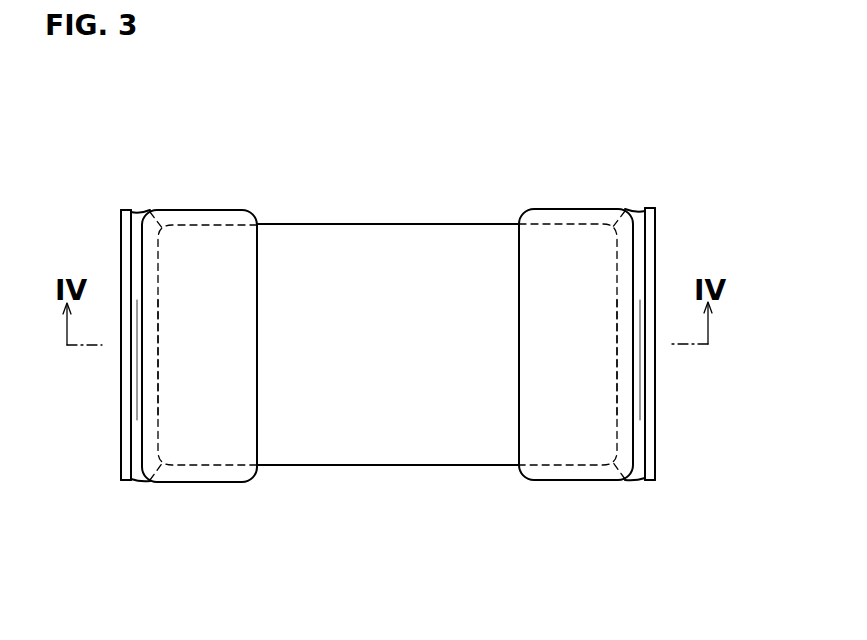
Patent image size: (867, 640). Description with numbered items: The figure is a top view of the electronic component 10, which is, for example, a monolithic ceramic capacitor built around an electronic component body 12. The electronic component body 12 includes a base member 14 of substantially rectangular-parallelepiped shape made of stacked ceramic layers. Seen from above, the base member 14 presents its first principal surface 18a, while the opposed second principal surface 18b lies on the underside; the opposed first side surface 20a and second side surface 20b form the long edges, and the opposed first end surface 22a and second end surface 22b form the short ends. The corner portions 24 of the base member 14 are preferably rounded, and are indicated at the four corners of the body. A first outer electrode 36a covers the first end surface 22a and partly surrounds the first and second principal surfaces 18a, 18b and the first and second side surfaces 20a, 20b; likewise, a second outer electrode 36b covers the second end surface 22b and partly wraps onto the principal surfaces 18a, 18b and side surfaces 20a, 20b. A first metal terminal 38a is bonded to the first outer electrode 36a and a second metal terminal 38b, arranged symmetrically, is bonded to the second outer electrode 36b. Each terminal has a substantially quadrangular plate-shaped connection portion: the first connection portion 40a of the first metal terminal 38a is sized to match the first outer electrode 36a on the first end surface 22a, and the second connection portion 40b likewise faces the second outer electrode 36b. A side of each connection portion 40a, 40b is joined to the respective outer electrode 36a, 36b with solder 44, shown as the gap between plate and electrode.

The electronic component 10 is at (62, 118).
The electronic component body 12 is at (283, 214).
The base member 14 is at (330, 222).
The first principal surface 18a is at (372, 288).
The second principal surface 18b is at (410, 388).
The first side surface 20a is at (367, 466).
The second side surface 20b is at (423, 222).
The first end surface 22a is at (157, 355).
The second end surface 22b is at (618, 355).
The corner portions 24 is at (150, 212).
The first outer electrode 36a is at (227, 210).
The second outer electrode 36b is at (552, 208).
The first metal terminal 38a is at (119, 217).
The second metal terminal 38b is at (657, 217).
The first connection portion 40a is at (126, 268).
The second connection portion 40b is at (650, 265).
The solder 44 is at (137, 395).